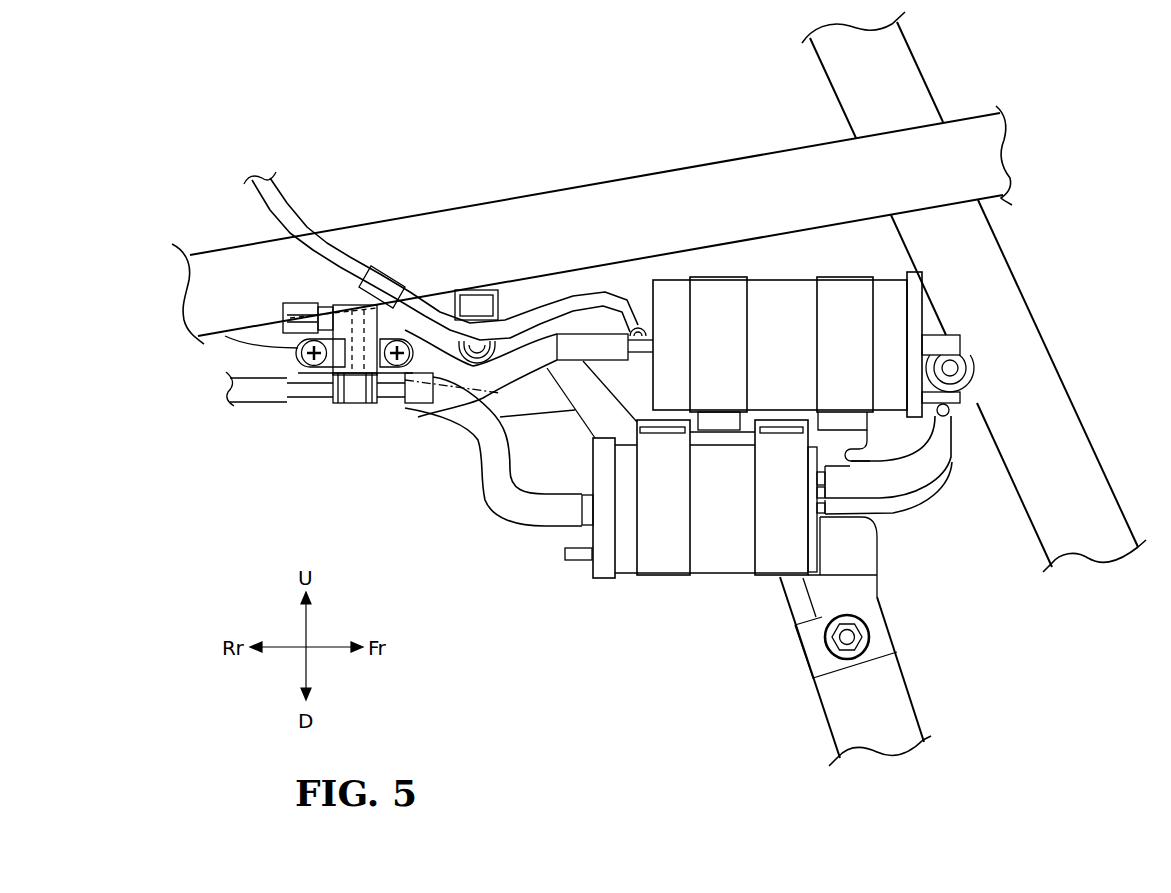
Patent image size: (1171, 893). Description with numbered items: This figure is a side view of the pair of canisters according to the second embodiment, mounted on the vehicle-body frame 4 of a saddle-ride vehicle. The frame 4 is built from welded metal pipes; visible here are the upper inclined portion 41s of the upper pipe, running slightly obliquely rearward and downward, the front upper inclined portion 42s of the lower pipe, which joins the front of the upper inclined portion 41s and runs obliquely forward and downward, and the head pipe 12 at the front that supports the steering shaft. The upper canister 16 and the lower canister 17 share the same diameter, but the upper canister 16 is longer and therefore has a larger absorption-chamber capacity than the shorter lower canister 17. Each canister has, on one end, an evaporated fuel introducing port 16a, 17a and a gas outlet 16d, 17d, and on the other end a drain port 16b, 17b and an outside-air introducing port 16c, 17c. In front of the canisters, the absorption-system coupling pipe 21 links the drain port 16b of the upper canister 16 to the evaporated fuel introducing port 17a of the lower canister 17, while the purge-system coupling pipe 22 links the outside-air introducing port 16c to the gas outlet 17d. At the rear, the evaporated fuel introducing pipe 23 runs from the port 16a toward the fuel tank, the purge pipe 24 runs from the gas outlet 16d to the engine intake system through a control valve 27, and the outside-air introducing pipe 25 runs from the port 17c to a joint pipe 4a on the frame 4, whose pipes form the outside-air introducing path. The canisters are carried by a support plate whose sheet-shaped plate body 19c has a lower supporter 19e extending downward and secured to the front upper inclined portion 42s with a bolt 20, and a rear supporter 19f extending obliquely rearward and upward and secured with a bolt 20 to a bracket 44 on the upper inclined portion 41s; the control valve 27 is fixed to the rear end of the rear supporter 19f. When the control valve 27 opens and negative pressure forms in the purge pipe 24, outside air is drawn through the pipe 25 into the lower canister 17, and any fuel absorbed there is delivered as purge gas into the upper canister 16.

The vehicle-body frame 4 is at (497, 194).
The joint pipe 4a is at (403, 300).
The head pipe 12 is at (1083, 490).
The upper canister 16 is at (783, 312).
The evaporated fuel introducing port 16a is at (637, 326).
The drain port 16b is at (950, 398).
The outside-air introducing port 16c is at (950, 342).
The gas outlet 16d is at (603, 407).
The lower canister 17 is at (718, 540).
The evaporated fuel introducing port 17a is at (822, 515).
The drain port 17b is at (580, 555).
The outside-air introducing port 17c is at (582, 505).
The gas outlet 17d is at (820, 482).
The plate body 19c is at (857, 563).
The lower supporter 19e is at (855, 605).
The rear supporter 19f is at (640, 555).
The bolt 20 is at (467, 375).
The absorption-system coupling pipe 21 is at (930, 493).
The purge-system coupling pipe 22 is at (915, 457).
The evaporated fuel introducing pipe 23 is at (288, 210).
The purge pipe 24 is at (542, 358).
The outside-air introducing pipe 25 is at (510, 503).
The control valve 27 is at (353, 358).
The upper inclined portion 41s is at (693, 192).
The front upper inclined portion 42s is at (890, 702).
The bracket 44 is at (457, 303).